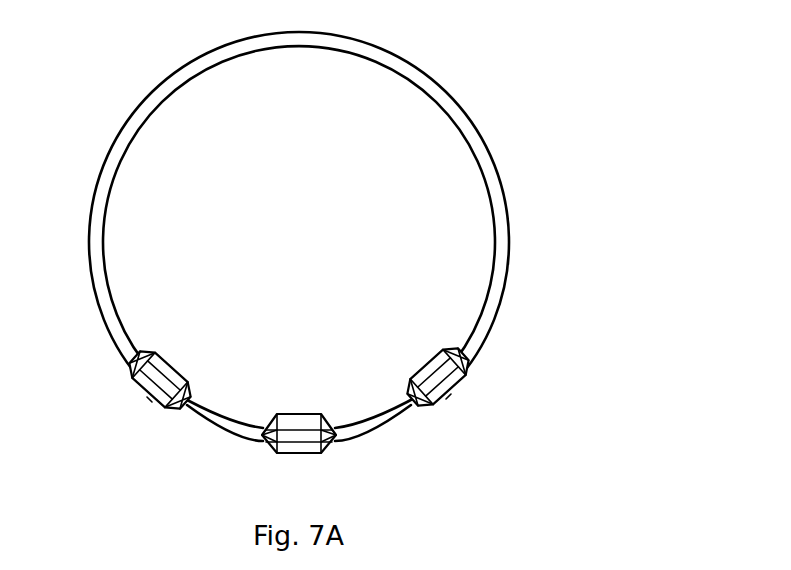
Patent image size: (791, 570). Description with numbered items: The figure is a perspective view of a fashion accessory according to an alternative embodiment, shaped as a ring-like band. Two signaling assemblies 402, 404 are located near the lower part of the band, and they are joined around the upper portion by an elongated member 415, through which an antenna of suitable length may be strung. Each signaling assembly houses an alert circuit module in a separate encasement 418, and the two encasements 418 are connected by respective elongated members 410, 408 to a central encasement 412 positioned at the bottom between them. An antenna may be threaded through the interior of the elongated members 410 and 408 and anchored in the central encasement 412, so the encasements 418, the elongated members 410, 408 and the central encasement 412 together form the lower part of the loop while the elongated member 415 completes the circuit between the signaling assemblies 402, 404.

The elongated member 415 is at (388, 52).
The signaling assembly 404 is at (183, 359).
The signaling assembly 402 is at (415, 359).
The central encasement 412 is at (300, 414).
The encasement 418 is at (148, 398).
The elongated member 410 is at (222, 427).
The elongated member 408 is at (381, 427).